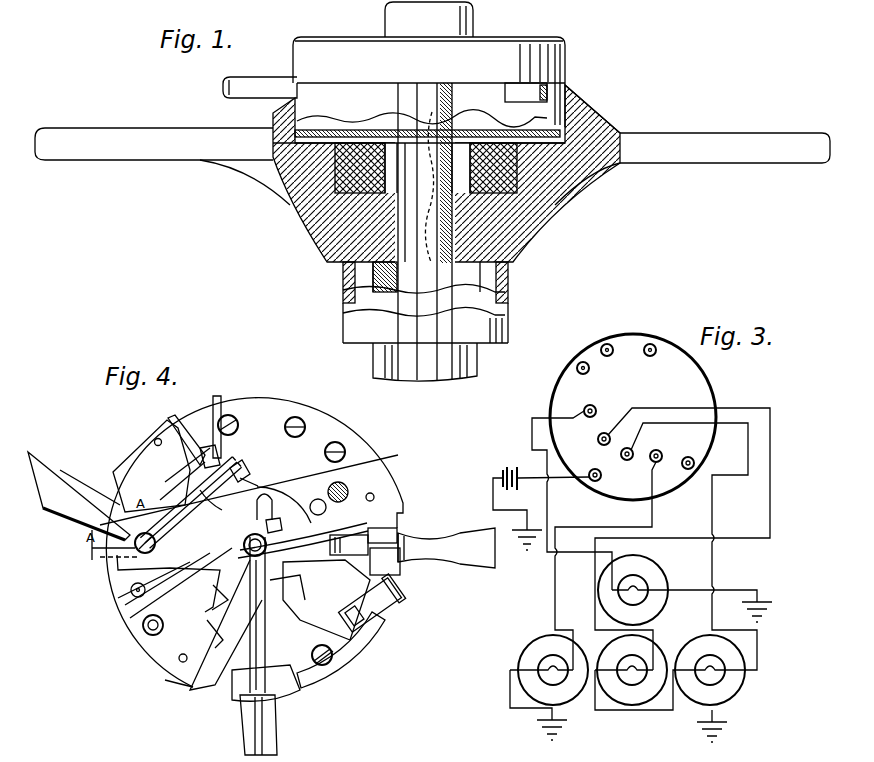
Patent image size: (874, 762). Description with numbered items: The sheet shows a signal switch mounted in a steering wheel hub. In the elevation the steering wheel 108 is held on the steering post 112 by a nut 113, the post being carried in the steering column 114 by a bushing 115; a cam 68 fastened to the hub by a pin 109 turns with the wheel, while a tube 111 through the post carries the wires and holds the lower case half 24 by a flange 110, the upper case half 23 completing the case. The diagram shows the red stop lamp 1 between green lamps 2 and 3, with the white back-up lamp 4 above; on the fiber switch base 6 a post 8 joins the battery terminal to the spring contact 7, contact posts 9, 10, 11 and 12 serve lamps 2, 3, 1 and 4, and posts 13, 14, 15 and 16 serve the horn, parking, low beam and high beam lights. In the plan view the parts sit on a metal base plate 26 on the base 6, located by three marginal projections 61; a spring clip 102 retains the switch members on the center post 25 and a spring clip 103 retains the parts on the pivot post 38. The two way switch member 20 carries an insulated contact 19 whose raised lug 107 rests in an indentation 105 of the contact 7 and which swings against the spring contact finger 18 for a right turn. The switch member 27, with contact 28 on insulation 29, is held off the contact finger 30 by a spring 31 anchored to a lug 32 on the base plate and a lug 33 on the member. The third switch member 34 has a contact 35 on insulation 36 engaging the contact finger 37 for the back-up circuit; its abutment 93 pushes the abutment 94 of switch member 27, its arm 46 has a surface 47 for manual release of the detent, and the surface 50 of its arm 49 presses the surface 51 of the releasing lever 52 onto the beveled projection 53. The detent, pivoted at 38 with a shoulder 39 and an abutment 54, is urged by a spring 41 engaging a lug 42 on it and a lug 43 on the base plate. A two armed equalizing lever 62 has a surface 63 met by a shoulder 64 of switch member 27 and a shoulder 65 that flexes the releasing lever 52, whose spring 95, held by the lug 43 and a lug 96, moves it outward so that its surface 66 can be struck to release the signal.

In FIG. 3, the stop light 1 is at (653, 662).
In FIG. 3, the lamp 2 is at (540, 665).
In FIG. 3, the lamp 3 is at (738, 690).
In FIG. 3, the lamp 4 is at (646, 586).
In FIG. 3, the switch base 6 is at (636, 335).
In FIG. 4, the switch base 6 is at (356, 459).
In FIG. 4, the contact 7 is at (312, 690).
In FIG. 3, the post 8 is at (590, 481).
In FIG. 4, the post 8 is at (334, 670).
In FIG. 3, the contact post 9 is at (660, 463).
In FIG. 3, the contact post 10 is at (624, 461).
In FIG. 3, the contact post 11 is at (598, 441).
In FIG. 3, the contact post 12 is at (584, 410).
In FIG. 3, the contact post 13 is at (689, 470).
In FIG. 4, the contact post 13 is at (148, 630).
In FIG. 3, the contact post 14 is at (655, 346).
In FIG. 4, the contact post 14 is at (233, 416).
In FIG. 3, the contact post 15 is at (604, 344).
In FIG. 4, the contact post 15 is at (305, 420).
In FIG. 3, the contact post 16 is at (578, 364).
In FIG. 4, the contact post 16 is at (346, 448).
In FIG. 4, the spring contact finger 18 is at (330, 490).
In FIG. 4, the contact 19 is at (118, 557).
In FIG. 4, the switch member 20 is at (248, 705).
In FIG. 1, the case half 23 is at (570, 45).
In FIG. 1, the case half 24 is at (568, 98).
In FIG. 4, the center pivot post 25 is at (255, 515).
In FIG. 4, the base plate 26 is at (133, 445).
In FIG. 4, the switch member 27 is at (326, 600).
In FIG. 4, the contact 28 is at (388, 596).
In FIG. 4, the insulation 29 is at (392, 612).
In FIG. 4, the contact finger 30 is at (326, 507).
In FIG. 4, the spring 31 is at (288, 548).
In FIG. 4, the lug 32 is at (398, 512).
In FIG. 4, the lug 33 is at (215, 682).
In FIG. 4, the switch member 34 is at (418, 548).
In FIG. 4, the contact 35 is at (402, 562).
In FIG. 4, the insulation 36 is at (410, 537).
In FIG. 4, the contact finger 37 is at (178, 478).
In FIG. 4, the pivot post 38 is at (122, 582).
In FIG. 4, the shoulder 39 is at (214, 604).
In FIG. 4, the spring 41 is at (183, 428).
In FIG. 4, the lug 42 is at (207, 447).
In FIG. 4, the lug 43 is at (246, 476).
In FIG. 4, the arm 46 is at (244, 546).
In FIG. 4, the surface 47 is at (168, 583).
In FIG. 4, the arm 49 is at (180, 650).
In FIG. 4, the surface 50 is at (140, 611).
In FIG. 4, the surface 51 is at (125, 606).
In FIG. 4, the releasing lever 52 is at (88, 532).
In FIG. 4, the beveled projection 53 is at (218, 420).
In FIG. 4, the abutment 54 is at (252, 484).
In FIG. 4, the marginal projections 61 is at (113, 470).
In FIG. 4, the equalizing lever 62 is at (265, 527).
In FIG. 4, the surface 63 is at (218, 632).
In FIG. 4, the shoulder 64 is at (165, 681).
In FIG. 4, the shoulder 65 is at (90, 549).
In FIG. 4, the surface 66 is at (77, 524).
In FIG. 1, the cam 68 is at (553, 190).
In FIG. 4, the abutment 93 is at (342, 558).
In FIG. 4, the abutment 94 is at (287, 587).
In FIG. 4, the spring 95 is at (170, 495).
In FIG. 4, the lug 96 is at (235, 442).
In FIG. 4, the spring clip 102 is at (283, 495).
In FIG. 4, the spring clip 103 is at (108, 507).
In FIG. 4, the indentation 105 is at (285, 700).
In FIG. 4, the raised lug 107 is at (242, 737).
In FIG. 1, the steering wheel 108 is at (605, 125).
In FIG. 1, the pin 109 is at (445, 173).
In FIG. 1, the flange 110 is at (398, 118).
In FIG. 1, the tube 111 is at (400, 232).
In FIG. 1, the steering post 112 is at (372, 284).
In FIG. 1, the nut 113 is at (548, 205).
In FIG. 1, the steering column 114 is at (511, 293).
In FIG. 1, the bushing 115 is at (494, 282).